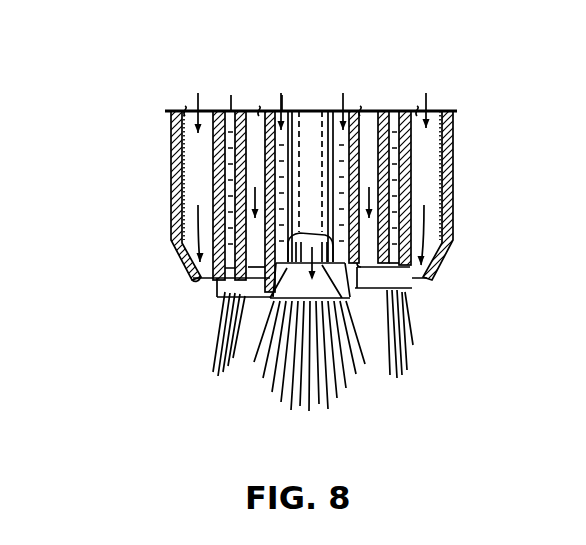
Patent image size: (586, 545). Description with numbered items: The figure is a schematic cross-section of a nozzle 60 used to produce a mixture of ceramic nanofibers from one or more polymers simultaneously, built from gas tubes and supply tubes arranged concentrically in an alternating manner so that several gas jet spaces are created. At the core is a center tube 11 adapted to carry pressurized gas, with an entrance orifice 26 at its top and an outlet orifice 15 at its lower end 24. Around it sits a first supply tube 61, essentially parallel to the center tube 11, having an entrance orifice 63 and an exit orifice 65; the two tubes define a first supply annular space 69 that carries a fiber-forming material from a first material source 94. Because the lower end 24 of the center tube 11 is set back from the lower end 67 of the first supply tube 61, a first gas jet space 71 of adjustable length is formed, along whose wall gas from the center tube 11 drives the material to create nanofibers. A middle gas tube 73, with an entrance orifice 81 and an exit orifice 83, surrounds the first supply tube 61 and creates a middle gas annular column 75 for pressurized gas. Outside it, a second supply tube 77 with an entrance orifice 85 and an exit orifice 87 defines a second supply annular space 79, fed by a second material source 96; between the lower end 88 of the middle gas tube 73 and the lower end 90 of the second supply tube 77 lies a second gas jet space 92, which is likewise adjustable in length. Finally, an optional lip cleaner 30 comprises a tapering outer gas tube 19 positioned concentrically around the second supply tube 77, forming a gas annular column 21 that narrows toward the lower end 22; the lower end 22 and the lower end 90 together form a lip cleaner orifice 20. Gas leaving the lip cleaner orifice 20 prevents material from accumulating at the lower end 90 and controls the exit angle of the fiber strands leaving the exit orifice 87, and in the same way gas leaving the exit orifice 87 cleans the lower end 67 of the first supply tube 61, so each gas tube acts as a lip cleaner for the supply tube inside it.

The nozzle 60 is at (122, 108).
The lip cleaner 30 is at (165, 160).
The outer gas tube 19 is at (171, 183).
The gas annular column 21 is at (191, 148).
The lower end of outer gas tube 22 is at (193, 276).
The lip cleaner orifice 20 is at (213, 282).
The lower end of middle gas tube 88 is at (220, 284).
The lower end of second supply tube 90 is at (227, 285).
The second gas jet space 92 is at (232, 288).
The first gas jet space 71 is at (237, 294).
The lower end of first supply tube 67 is at (258, 300).
The exit orifice of first supply tube 65 is at (268, 315).
The outlet orifice of center tube 15 is at (342, 302).
The lower end of center tube 24 is at (338, 272).
The exit orifice of second supply tube 87 is at (393, 287).
The exit orifice of middle gas tube 83 is at (401, 302).
The second supply annular space 79 is at (420, 227).
The second supply tube 77 is at (420, 200).
The middle gas tube 73 is at (408, 186).
The middle gas annular column 75 is at (372, 152).
The first supply annular space 69 is at (344, 172).
The entrance orifice of second supply tube 85 is at (402, 110).
The first supply tube 61 is at (358, 124).
The entrance orifice of first supply tube 63 is at (341, 116).
The center tube 11 is at (318, 105).
The entrance orifice of center tube 26 is at (307, 111).
The entrance orifice of middle gas tube 81 is at (252, 111).
The second material source 96 is at (231, 89).
The first material source 94 is at (282, 89).